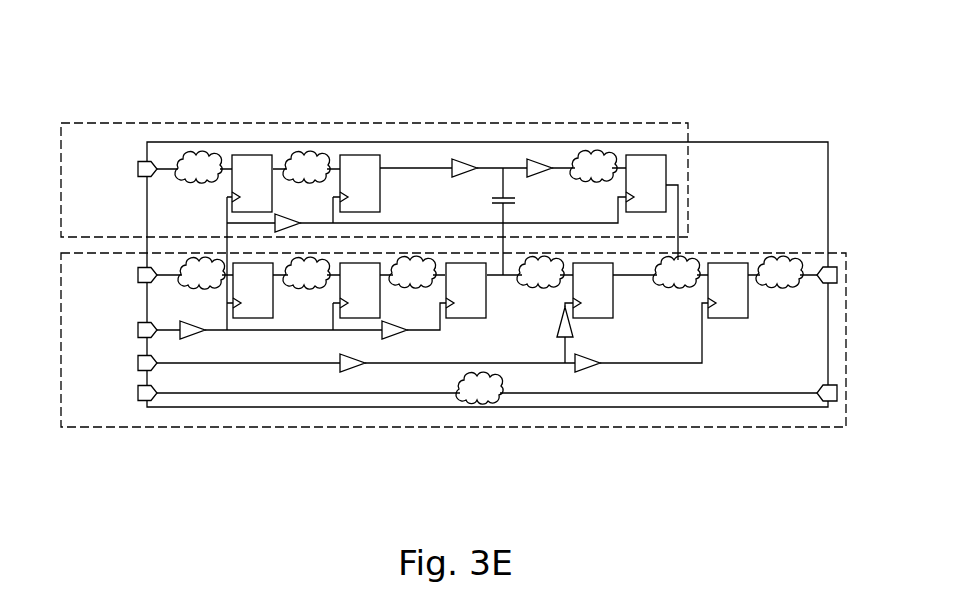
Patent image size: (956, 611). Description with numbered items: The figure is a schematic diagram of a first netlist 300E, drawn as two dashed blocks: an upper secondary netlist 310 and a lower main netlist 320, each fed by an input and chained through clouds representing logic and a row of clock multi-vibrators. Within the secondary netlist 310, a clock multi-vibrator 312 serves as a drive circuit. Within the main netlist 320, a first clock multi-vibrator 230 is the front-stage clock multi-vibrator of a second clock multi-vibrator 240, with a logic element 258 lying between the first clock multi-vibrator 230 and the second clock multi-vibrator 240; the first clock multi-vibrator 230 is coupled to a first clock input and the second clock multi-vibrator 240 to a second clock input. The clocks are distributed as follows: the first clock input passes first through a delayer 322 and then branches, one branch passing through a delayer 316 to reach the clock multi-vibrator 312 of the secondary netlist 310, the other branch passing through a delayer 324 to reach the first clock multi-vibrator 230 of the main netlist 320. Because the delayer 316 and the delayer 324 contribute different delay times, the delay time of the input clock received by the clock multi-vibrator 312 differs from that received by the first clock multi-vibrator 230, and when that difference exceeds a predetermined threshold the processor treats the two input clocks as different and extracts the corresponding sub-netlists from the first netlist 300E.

The first netlist 300E is at (112, 70).
The secondary netlist 310 is at (672, 123).
The clock multi-vibrator 312 is at (360, 156).
The delayer 316 is at (287, 213).
The main netlist 320 is at (812, 427).
The delayer 322 is at (197, 335).
The delayer 324 is at (398, 337).
The first clock multi-vibrator 230 is at (465, 318).
The logic element 258 is at (535, 287).
The second clock multi-vibrator 240 is at (607, 318).